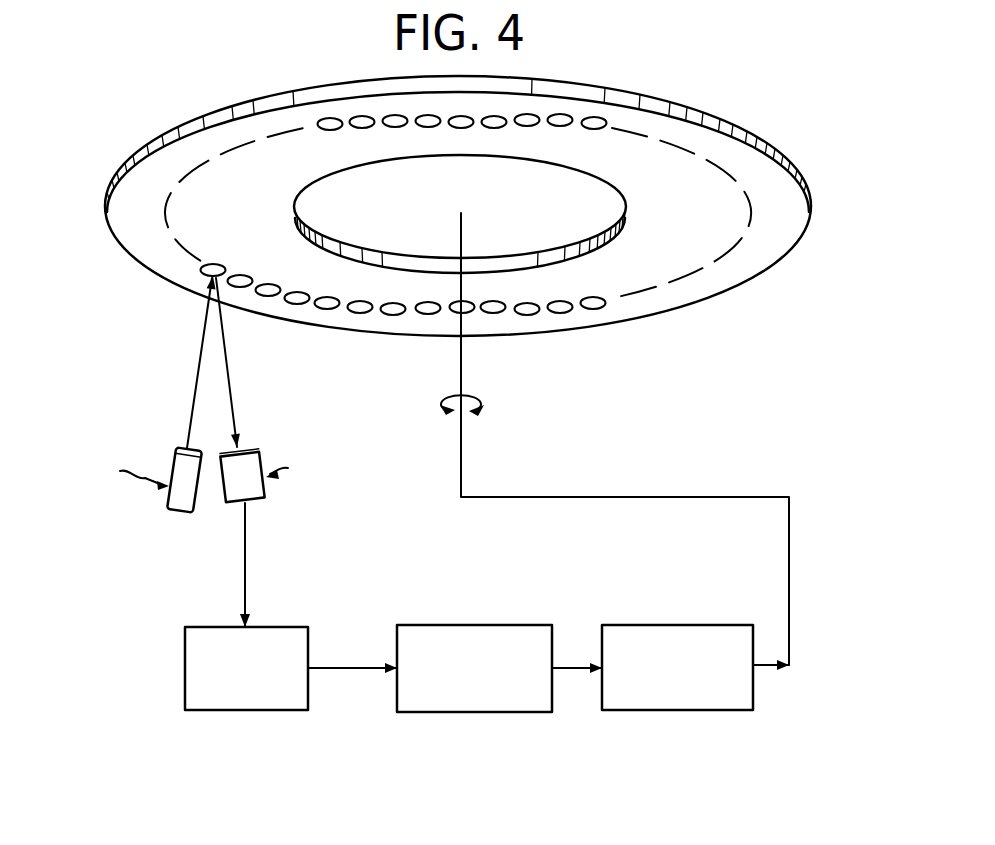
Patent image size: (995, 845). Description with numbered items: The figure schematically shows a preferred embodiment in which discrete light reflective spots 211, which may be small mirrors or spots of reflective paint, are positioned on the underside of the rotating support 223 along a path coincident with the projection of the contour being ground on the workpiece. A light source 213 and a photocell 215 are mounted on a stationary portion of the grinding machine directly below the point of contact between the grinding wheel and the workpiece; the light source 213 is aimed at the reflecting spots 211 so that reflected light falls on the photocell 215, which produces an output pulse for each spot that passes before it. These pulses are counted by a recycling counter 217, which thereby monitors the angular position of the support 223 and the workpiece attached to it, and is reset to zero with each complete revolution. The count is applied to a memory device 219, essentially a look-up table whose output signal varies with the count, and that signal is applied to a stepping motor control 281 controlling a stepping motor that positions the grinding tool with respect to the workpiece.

The light reflective spots 211 is at (462, 128).
The light source 213 is at (170, 503).
The photocell 215 is at (258, 500).
The recycling counter 217 is at (250, 712).
The memory device 219 is at (500, 713).
The support 223 is at (797, 198).
The stepping motor control 281 is at (710, 712).